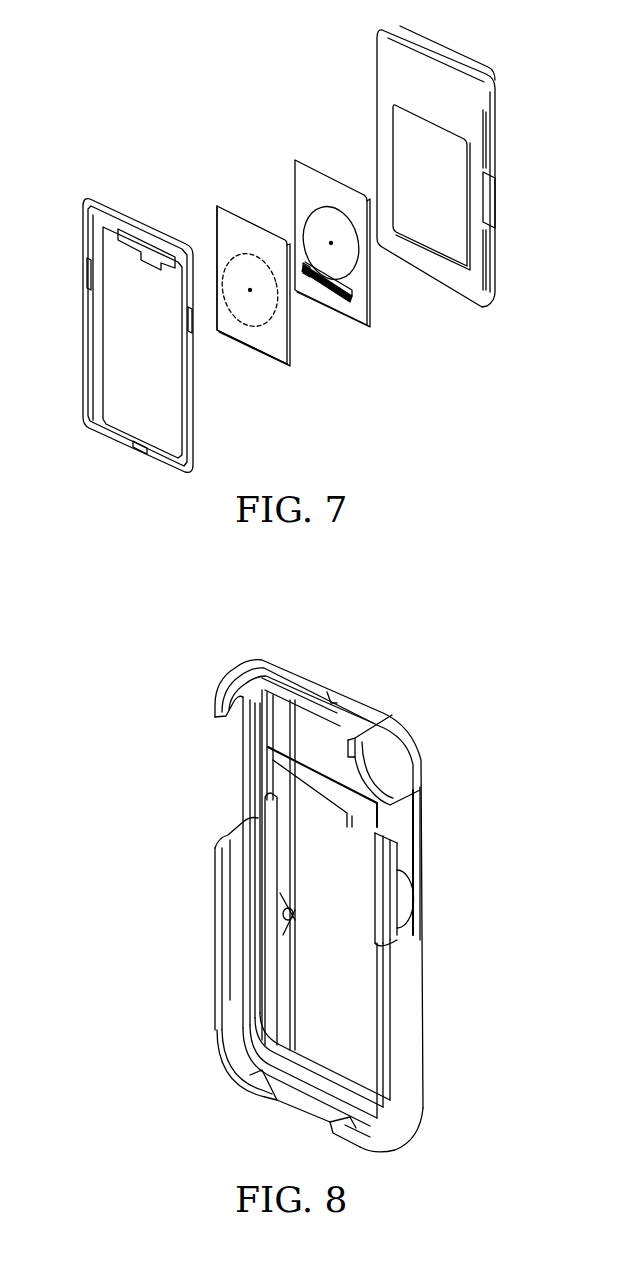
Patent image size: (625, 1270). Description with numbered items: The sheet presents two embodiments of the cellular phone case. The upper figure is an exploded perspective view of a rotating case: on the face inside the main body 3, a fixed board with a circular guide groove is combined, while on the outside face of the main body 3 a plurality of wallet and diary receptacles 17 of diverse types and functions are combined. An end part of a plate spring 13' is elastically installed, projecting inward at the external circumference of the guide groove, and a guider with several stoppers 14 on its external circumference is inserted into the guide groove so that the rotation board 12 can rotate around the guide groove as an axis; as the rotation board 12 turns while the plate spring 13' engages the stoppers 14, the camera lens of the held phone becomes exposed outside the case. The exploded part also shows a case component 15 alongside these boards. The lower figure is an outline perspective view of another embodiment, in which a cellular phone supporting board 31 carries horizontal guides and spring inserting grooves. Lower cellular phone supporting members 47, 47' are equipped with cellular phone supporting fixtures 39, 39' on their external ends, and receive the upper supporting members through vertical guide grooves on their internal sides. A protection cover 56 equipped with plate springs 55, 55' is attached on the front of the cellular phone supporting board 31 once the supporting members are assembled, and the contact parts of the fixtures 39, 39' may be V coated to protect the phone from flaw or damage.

In FIG. 7, the case shell 15 is at (100, 247).
In FIG. 7, the rotation board 12 is at (242, 230).
In FIG. 7, the stoppers 14 is at (253, 255).
In FIG. 7, the plate spring 13' is at (340, 222).
In FIG. 7, the main body 3 is at (463, 90).
In FIG. 7, the wallet and diary receptacles 17 is at (497, 292).
In FIG. 8, the lower cellular phone supporting member 47 is at (219, 870).
In FIG. 8, the cellular phone supporting fixture 39 is at (266, 1063).
In FIG. 8, the plate spring 55 is at (231, 903).
In FIG. 8, the cellular phone supporting board 31 is at (331, 802).
In FIG. 8, the protection cover 56 is at (337, 897).
In FIG. 8, the plate spring 55' is at (445, 975).
In FIG. 8, the lower cellular phone supporting member 47' is at (442, 1097).
In FIG. 8, the cellular phone supporting fixture 39' is at (420, 1115).